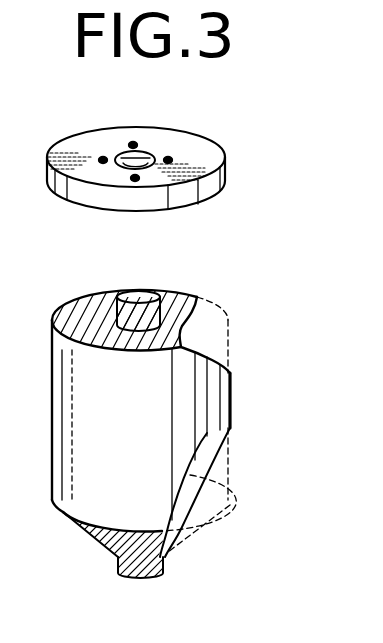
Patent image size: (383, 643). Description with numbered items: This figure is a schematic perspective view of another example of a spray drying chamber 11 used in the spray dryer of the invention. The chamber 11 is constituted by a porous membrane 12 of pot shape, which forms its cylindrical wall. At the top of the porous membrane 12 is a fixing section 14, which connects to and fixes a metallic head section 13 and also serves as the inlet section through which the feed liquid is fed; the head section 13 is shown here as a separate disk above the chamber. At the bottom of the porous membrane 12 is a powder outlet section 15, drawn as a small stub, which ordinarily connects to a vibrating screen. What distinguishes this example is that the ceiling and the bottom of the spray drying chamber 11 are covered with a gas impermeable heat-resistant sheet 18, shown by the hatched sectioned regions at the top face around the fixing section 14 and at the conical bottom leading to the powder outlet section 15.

The spray drying chamber 11 is at (240, 370).
The porous membrane 12 is at (230, 403).
The metallic head section 13 is at (212, 187).
The fixing section 14 is at (167, 292).
The powder outlet section 15 is at (165, 560).
The gas impermeable heat-resistant sheet 18 is at (73, 303).